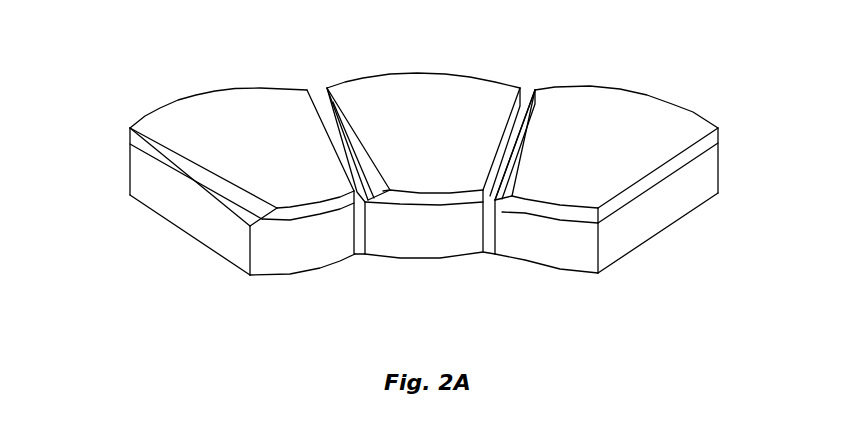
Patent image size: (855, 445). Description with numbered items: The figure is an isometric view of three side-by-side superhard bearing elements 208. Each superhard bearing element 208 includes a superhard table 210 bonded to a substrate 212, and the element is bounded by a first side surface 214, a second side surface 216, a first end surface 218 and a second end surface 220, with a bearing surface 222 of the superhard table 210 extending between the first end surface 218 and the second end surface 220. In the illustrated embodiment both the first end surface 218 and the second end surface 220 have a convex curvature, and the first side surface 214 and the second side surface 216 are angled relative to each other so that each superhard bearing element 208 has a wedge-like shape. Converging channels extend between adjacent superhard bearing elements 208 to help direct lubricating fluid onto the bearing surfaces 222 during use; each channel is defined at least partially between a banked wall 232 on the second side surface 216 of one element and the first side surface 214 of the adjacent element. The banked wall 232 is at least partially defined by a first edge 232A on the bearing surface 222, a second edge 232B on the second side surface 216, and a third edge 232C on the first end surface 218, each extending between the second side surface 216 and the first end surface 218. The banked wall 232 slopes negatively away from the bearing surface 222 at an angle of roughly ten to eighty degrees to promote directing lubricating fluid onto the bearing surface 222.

The superhard bearing element 208 is at (140, 85).
The superhard table 210 is at (141, 140).
The substrate 212 is at (142, 183).
The first side surface 214 is at (326, 134).
The second side surface 216 is at (193, 215).
The first end surface 218 is at (300, 259).
The second end surface 220 is at (211, 91).
The bearing surface 222 is at (273, 112).
The banked wall 232 is at (248, 208).
The first edge 232A is at (161, 107).
The second edge 232B is at (188, 176).
The third edge 232C is at (264, 222).